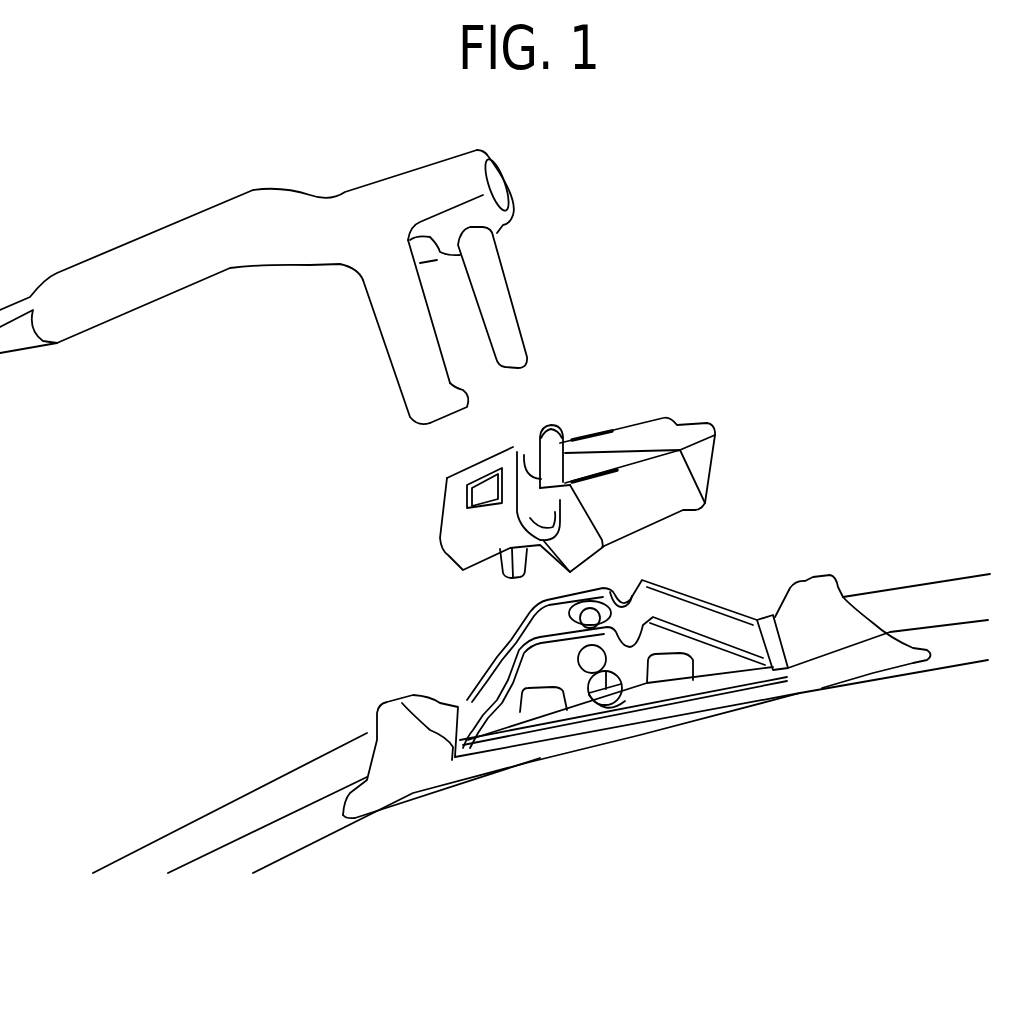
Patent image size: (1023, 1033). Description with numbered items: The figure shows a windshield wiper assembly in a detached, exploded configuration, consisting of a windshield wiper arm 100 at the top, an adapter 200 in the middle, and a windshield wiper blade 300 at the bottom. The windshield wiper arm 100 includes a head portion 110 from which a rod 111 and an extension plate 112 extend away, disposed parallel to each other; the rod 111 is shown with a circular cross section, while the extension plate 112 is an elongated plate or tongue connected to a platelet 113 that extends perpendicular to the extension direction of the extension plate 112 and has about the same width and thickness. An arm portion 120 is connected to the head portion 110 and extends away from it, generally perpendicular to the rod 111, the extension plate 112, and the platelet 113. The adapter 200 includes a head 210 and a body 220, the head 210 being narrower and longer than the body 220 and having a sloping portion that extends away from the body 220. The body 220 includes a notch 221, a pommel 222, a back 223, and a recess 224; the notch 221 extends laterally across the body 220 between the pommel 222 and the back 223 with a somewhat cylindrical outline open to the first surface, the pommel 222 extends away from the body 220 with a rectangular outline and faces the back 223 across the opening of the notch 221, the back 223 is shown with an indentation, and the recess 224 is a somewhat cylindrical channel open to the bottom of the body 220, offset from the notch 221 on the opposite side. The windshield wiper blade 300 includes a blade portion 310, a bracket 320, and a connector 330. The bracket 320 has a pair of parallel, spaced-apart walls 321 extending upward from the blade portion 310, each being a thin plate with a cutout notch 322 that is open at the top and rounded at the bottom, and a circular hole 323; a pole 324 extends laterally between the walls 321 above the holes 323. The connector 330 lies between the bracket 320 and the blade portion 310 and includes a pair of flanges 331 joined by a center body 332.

The windshield wiper arm 100 is at (353, 293).
The head portion 110 is at (467, 293).
The rod 111 is at (525, 360).
The extension plate 112 is at (388, 357).
The platelet 113 is at (408, 415).
The arm portion 120 is at (108, 258).
The adapter 200 is at (560, 502).
The head 210 is at (713, 425).
The body 220 is at (443, 502).
The notch 221 is at (527, 447).
The pommel 222 is at (553, 430).
The back 223 is at (473, 493).
The recess 224 is at (518, 557).
The windshield wiper blade 300 is at (541, 688).
The blade portion 310 is at (292, 857).
The bracket 320 is at (604, 626).
The wall 321 is at (735, 610).
The cutout notch 322 is at (626, 598).
The hole 323 is at (611, 712).
The pole 324 is at (585, 620).
The connector 330 is at (614, 680).
The flange 331 is at (877, 650).
The center body 332 is at (535, 732).